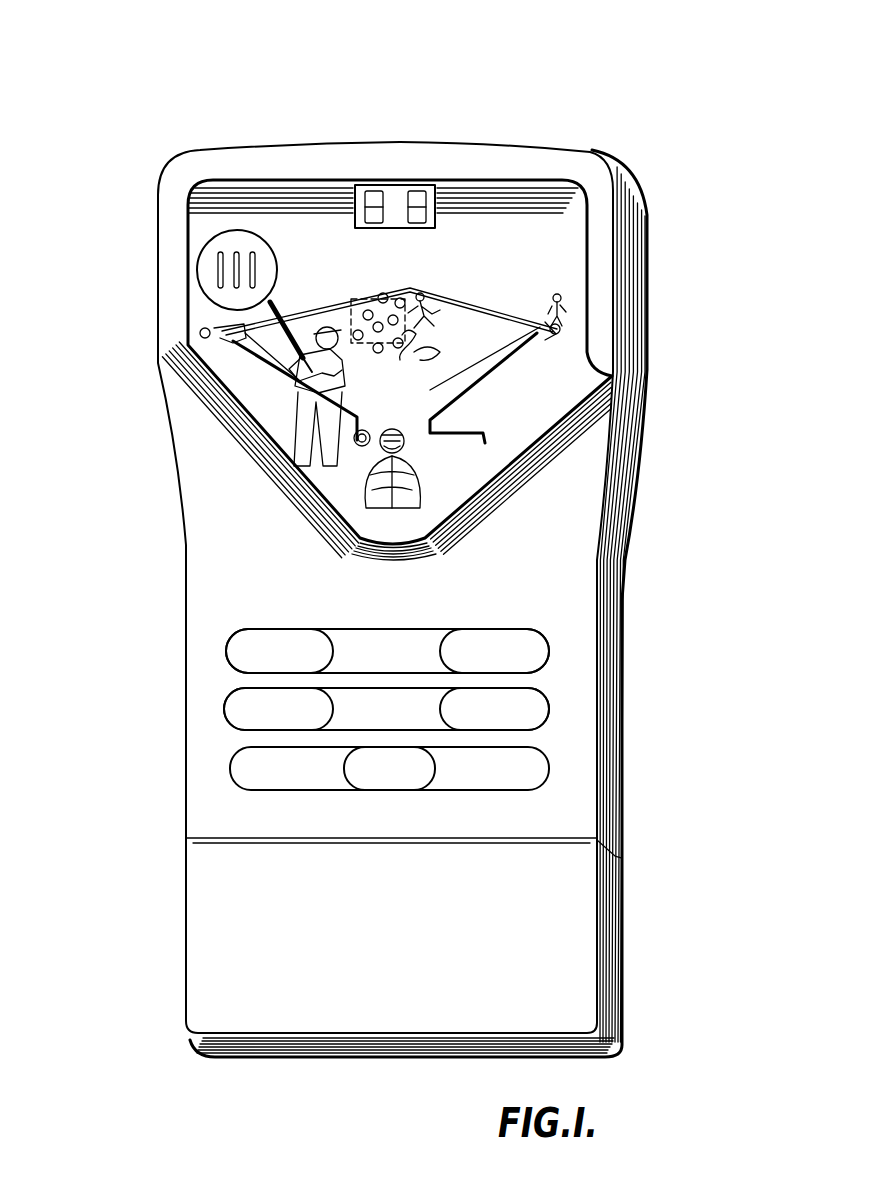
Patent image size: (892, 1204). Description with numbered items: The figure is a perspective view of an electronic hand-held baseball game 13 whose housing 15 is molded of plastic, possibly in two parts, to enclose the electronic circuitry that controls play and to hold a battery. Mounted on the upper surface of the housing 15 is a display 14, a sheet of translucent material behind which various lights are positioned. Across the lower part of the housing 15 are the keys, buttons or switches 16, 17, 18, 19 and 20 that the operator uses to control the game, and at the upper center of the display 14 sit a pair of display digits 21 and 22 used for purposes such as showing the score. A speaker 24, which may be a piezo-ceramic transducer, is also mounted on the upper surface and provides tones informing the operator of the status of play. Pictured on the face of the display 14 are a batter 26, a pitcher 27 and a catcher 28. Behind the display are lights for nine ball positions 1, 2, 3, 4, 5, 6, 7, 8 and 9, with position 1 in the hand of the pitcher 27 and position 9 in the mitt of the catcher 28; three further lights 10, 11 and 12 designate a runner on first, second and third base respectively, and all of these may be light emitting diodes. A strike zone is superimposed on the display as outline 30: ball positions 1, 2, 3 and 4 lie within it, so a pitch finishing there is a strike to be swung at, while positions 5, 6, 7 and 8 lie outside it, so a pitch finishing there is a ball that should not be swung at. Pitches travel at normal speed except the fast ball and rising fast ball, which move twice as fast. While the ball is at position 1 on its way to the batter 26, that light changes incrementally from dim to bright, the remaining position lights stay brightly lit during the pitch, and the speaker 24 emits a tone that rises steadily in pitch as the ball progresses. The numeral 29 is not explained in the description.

The ball position light 1 is at (393, 314).
The ball position light 2 is at (398, 349).
The ball position light 3 is at (354, 331).
The ball position light 4 is at (364, 311).
The ball position light 5 is at (380, 296).
The ball position light 6 is at (420, 292).
The ball position light 7 is at (426, 356).
The ball position light 8 is at (378, 356).
The ball position light 9 is at (355, 446).
The runner light 10 is at (558, 334).
The runner light 11 is at (400, 298).
The runner light 12 is at (199, 334).
The electronic hand-held baseball game 13 is at (104, 33).
The display 14 is at (283, 235).
The housing 15 is at (502, 165).
The key 16 is at (226, 652).
The key 17 is at (548, 643).
The key 18 is at (238, 723).
The key 19 is at (545, 707).
The key 20 is at (346, 777).
The display digit 21 is at (369, 190).
The display digit 22 is at (413, 190).
The speaker 24 is at (197, 270).
The batter 26 is at (290, 400).
The pitcher 27 is at (440, 293).
The catcher 28 is at (425, 468).
The fielder figure 29 is at (567, 310).
The strike zone outline 30 is at (545, 263).